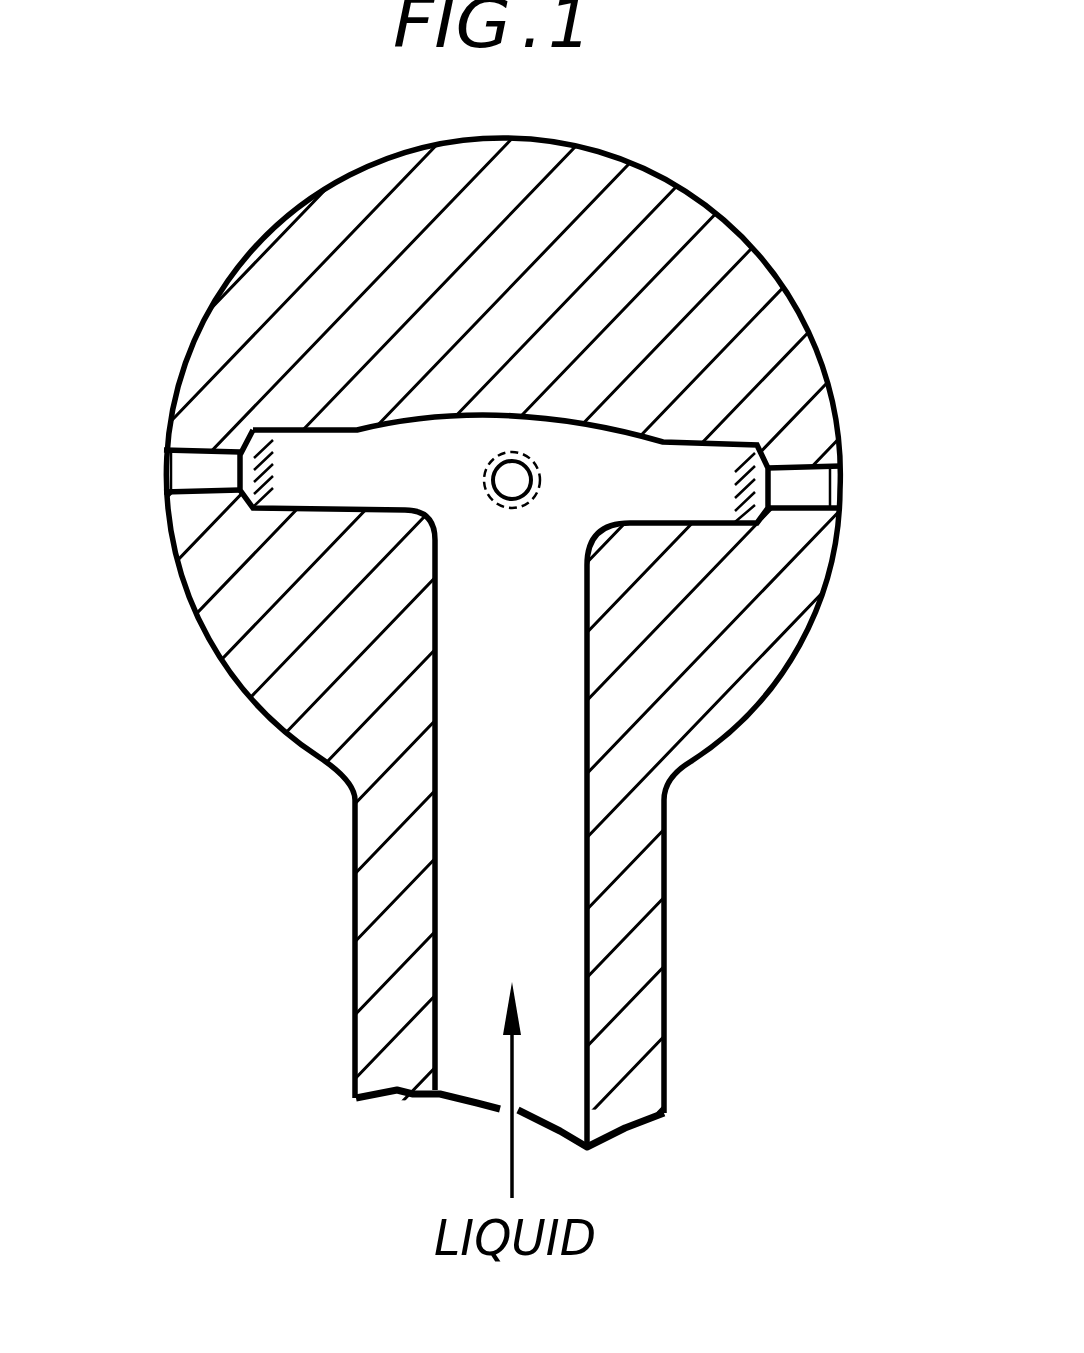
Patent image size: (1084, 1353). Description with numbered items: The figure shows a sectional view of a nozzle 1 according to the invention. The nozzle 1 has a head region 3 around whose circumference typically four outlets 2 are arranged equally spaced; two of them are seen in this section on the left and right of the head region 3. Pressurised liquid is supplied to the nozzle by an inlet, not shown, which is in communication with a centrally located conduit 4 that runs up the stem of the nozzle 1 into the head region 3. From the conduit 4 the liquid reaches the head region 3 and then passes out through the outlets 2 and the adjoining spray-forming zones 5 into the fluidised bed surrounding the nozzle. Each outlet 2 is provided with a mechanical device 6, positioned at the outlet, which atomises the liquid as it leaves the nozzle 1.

The nozzle 1 is at (223, 280).
The outlets 2 is at (300, 492).
The head region 3 is at (673, 227).
The centrally located conduit 4 is at (502, 752).
The spray-forming zones 5 is at (205, 475).
The mechanical device 6 is at (258, 462).